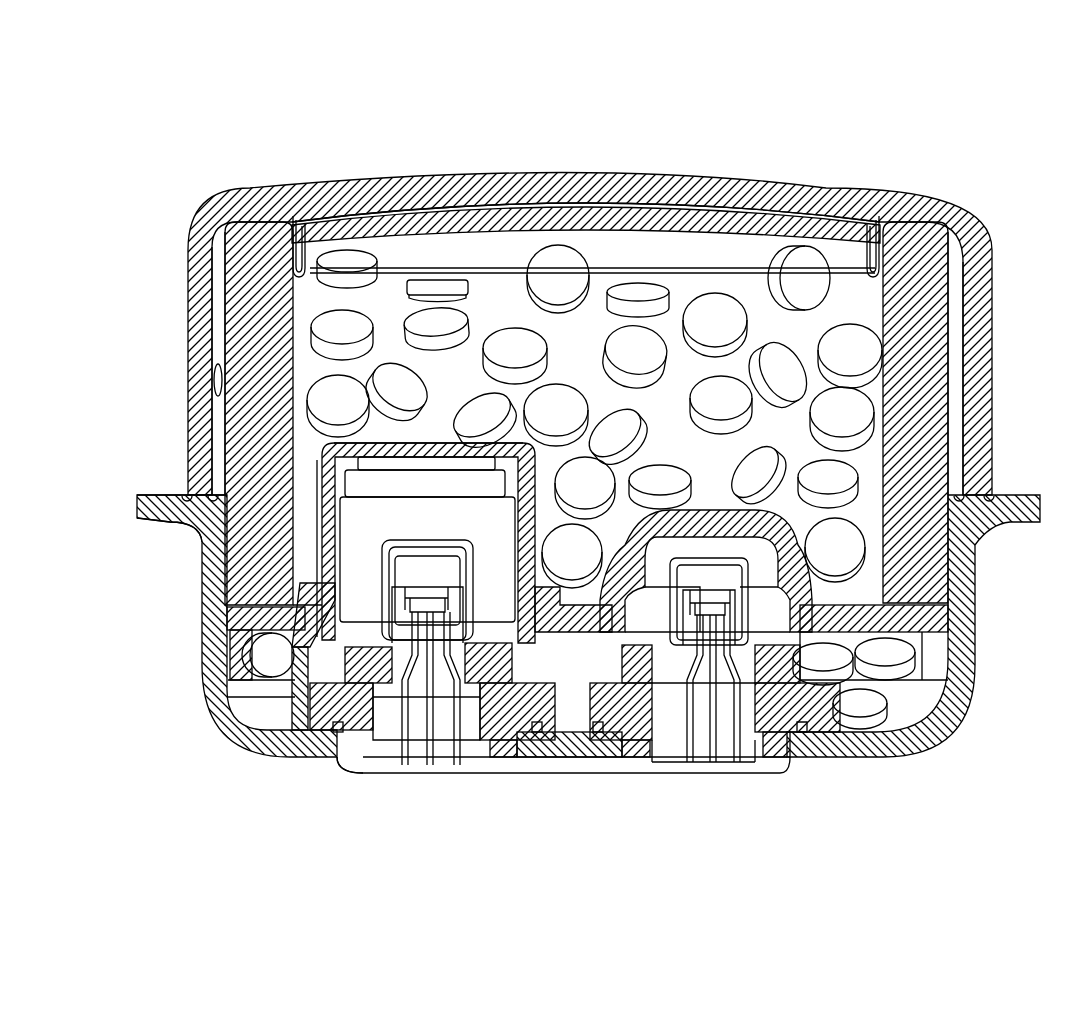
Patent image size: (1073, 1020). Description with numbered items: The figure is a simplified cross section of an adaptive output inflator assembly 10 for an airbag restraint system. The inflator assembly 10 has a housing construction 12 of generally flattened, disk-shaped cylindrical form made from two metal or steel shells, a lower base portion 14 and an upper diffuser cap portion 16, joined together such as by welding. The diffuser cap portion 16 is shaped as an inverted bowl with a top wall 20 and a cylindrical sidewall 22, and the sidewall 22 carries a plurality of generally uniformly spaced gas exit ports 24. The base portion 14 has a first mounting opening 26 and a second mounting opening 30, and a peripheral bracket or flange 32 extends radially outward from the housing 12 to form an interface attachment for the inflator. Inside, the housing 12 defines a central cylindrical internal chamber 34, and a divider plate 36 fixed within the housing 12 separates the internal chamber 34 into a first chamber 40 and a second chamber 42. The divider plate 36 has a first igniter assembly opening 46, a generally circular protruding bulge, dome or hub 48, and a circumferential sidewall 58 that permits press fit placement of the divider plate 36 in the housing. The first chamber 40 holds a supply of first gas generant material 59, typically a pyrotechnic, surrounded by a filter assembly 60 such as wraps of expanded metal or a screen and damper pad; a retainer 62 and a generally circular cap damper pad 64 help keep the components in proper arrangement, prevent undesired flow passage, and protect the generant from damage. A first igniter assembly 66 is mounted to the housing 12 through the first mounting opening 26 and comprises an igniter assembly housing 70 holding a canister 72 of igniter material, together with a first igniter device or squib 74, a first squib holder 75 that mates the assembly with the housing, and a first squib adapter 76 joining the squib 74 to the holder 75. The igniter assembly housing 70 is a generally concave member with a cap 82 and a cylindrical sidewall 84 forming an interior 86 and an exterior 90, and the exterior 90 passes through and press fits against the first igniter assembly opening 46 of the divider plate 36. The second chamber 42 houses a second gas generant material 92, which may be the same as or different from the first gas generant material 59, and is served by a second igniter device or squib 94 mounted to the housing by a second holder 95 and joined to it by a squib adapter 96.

The adaptive output inflator assembly 10 is at (992, 96).
The housing construction 12 is at (258, 184).
The base portion 14 is at (245, 732).
The diffuser cap portion 16 is at (198, 308).
The top wall 20 is at (505, 172).
The cylindrical sidewall 22 is at (198, 416).
The gas exit ports 24 is at (216, 380).
The first mounting opening 26 is at (341, 763).
The second mounting opening 30 is at (608, 760).
The peripheral bracket or flange 32 is at (140, 505).
The internal chamber 34 is at (658, 420).
The divider plate 36 is at (902, 612).
The first chamber 40 is at (588, 334).
The second chamber 42 is at (918, 705).
The first igniter assembly opening 46 is at (330, 612).
The protruding bulge, dome or hub 48 is at (692, 622).
The circumferential sidewall 58 is at (308, 652).
The first gas generant material 59 is at (796, 368).
The filter assembly 60 is at (258, 300).
The retainer 62 is at (300, 256).
The cap damper pad 64 is at (376, 214).
The first igniter assembly 66 is at (332, 535).
The igniter assembly housing 70 is at (295, 670).
The canister 72 is at (346, 580).
The first igniter device or squib 74 is at (321, 728).
The first squib holder 75 is at (343, 748).
The first squib adapter 76 is at (482, 665).
The cap 82 is at (430, 444).
The cylindrical sidewall 84 is at (330, 592).
The interior 86 is at (336, 497).
The exterior 90 is at (343, 526).
The second gas generant material 92 is at (897, 656).
The second igniter device or squib 94 is at (700, 602).
The second holder 95 is at (792, 736).
The squib adapter 96 is at (747, 655).